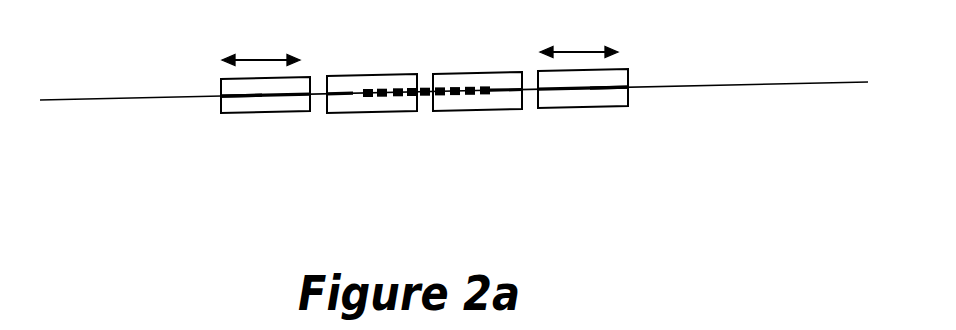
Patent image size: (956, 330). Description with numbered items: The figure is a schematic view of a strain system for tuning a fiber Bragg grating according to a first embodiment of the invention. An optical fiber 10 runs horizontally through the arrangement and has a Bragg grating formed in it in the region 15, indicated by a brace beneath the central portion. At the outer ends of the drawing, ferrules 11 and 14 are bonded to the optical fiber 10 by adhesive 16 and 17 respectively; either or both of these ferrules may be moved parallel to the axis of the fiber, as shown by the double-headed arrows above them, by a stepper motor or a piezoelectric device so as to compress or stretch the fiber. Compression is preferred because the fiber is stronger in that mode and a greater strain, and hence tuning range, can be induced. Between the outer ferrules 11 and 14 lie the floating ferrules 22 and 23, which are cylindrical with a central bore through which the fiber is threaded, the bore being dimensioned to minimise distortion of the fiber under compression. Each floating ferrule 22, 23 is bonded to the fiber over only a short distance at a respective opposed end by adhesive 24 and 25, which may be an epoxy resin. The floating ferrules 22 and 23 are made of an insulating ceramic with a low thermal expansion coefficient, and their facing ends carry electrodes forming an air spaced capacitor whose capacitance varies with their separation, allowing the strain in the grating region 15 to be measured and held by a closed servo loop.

The optical fiber 10 is at (133, 99).
The ferrule 11 is at (288, 113).
The ferrule 14 is at (567, 107).
The region 15 is at (505, 153).
The adhesive 16 is at (238, 97).
The adhesive 17 is at (608, 90).
The floating ferrule 22 is at (383, 75).
The floating ferrule 23 is at (472, 73).
The adhesive 24 is at (345, 95).
The adhesive 25 is at (502, 90).